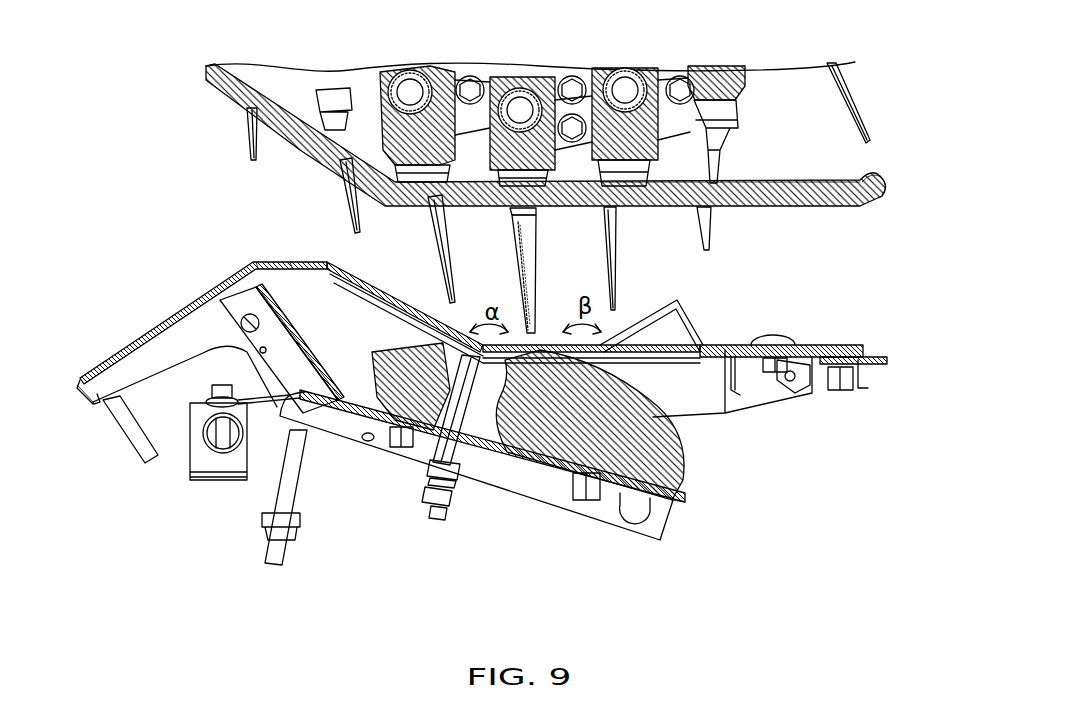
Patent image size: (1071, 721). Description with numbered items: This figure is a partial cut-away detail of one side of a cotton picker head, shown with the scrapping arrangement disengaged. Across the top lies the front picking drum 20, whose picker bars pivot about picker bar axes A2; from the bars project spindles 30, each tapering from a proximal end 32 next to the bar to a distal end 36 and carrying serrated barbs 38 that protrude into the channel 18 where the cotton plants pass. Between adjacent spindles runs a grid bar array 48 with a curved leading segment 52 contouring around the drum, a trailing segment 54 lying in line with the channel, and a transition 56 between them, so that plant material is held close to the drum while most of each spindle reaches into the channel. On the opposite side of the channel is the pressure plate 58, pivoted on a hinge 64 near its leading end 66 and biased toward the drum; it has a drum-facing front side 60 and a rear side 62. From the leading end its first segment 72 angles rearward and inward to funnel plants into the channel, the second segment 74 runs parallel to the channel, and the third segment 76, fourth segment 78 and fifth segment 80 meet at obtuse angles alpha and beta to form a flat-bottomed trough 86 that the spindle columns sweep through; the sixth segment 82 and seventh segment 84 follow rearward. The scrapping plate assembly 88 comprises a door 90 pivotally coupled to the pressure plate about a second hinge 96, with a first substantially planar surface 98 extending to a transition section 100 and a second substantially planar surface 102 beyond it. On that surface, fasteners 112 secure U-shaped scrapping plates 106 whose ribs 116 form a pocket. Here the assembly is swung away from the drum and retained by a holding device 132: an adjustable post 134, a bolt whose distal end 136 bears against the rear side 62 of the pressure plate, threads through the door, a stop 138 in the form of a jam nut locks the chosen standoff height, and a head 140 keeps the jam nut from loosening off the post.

The picker bar axis A2 is at (410, 92).
The front picking drum 20 is at (520, 66).
The proximal end 32 is at (640, 112).
The leading segment 52 is at (300, 132).
The transition 56 is at (392, 180).
The trailing segment 54 is at (742, 207).
The grid bar array 48 is at (820, 200).
The distal end 36 is at (527, 330).
The spindle 30 is at (535, 232).
The serrated barb 38 is at (537, 270).
The channel 18 is at (185, 210).
The first segment 72 is at (166, 318).
The pressure plate 58 is at (268, 264).
The second segment 74 is at (292, 264).
The hinge 64 is at (84, 378).
The leading end 66 is at (94, 410).
The rear side 62 is at (309, 272).
The first substantially planar surface 98 is at (292, 318).
The second hinge 96 is at (248, 316).
The third segment 76 is at (405, 300).
The fourth segment 78 is at (545, 342).
The seventh segment 84 is at (742, 342).
The fifth segment 80 is at (622, 332).
The front side 60 is at (662, 302).
The sixth segment 82 is at (706, 328).
The trough 86 is at (484, 282).
The transition section 100 is at (318, 386).
The second substantially planar surface 102 is at (354, 404).
The door 90 is at (630, 518).
The scrapping plate 106 is at (692, 458).
The rib 116 is at (672, 503).
The fastener 112 is at (586, 502).
The distal end 136 is at (512, 443).
The stop 138 is at (423, 462).
The adjustable post 134 is at (453, 488).
The head 140 is at (430, 496).
The holding device 132 is at (448, 545).
The scrapping plate assembly 88 is at (350, 433).